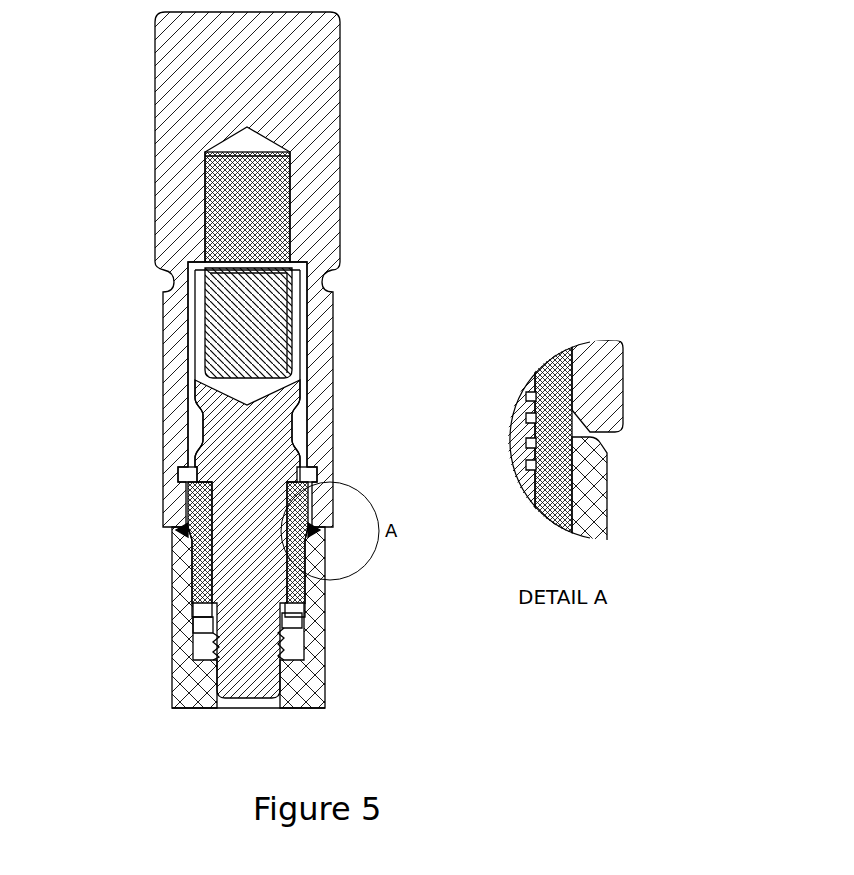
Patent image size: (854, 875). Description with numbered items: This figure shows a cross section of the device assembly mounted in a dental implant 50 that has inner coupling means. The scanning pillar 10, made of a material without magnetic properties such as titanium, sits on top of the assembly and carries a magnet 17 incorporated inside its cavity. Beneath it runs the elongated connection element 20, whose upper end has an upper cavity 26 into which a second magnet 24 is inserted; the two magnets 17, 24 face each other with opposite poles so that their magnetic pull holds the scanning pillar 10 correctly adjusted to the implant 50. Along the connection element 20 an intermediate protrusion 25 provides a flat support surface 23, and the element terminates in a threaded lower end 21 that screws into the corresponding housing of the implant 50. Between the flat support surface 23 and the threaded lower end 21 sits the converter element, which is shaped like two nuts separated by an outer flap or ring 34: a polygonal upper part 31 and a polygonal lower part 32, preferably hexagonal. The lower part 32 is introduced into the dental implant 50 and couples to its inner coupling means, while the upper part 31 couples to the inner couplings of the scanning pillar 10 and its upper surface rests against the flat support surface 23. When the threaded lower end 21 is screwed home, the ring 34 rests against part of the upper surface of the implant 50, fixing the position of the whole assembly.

The scanning pillar 10 is at (265, 92).
The magnet 17 is at (205, 215).
The connection element 20 is at (305, 395).
The threaded lower end 21 is at (172, 641).
The flat support surface 23 is at (317, 476).
The magnet 24 is at (312, 290).
The intermediate protrusion 25 is at (305, 436).
The upper cavity 26 is at (302, 357).
The upper part 31 is at (178, 478).
The lower part 32 is at (178, 553).
The outer flap or ring 34 is at (176, 530).
The implant 50 is at (325, 653).